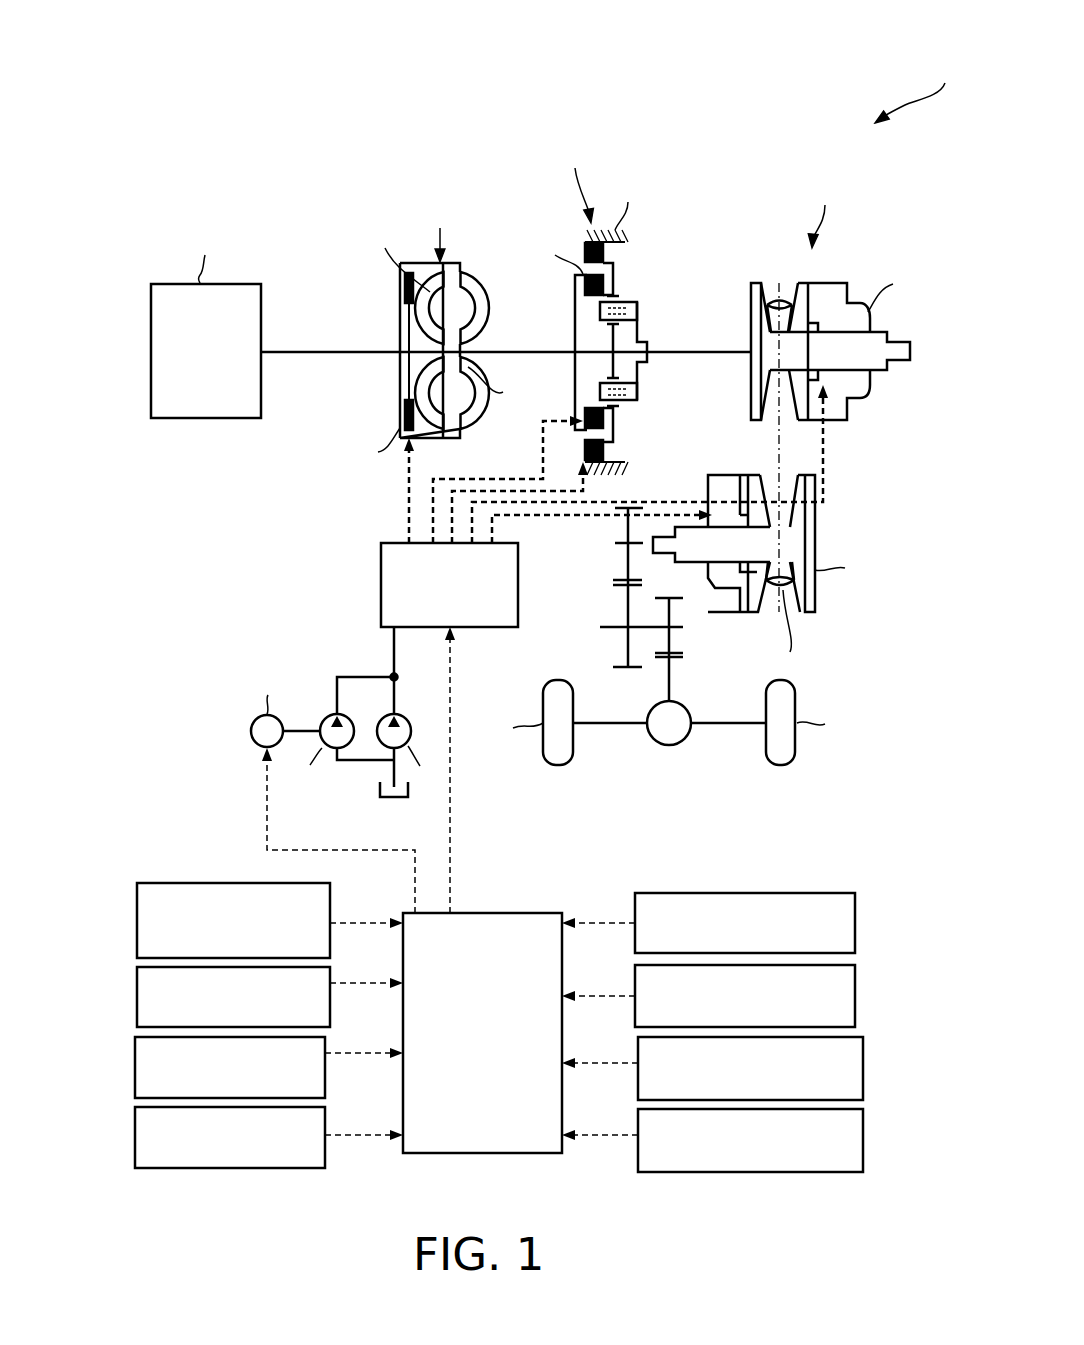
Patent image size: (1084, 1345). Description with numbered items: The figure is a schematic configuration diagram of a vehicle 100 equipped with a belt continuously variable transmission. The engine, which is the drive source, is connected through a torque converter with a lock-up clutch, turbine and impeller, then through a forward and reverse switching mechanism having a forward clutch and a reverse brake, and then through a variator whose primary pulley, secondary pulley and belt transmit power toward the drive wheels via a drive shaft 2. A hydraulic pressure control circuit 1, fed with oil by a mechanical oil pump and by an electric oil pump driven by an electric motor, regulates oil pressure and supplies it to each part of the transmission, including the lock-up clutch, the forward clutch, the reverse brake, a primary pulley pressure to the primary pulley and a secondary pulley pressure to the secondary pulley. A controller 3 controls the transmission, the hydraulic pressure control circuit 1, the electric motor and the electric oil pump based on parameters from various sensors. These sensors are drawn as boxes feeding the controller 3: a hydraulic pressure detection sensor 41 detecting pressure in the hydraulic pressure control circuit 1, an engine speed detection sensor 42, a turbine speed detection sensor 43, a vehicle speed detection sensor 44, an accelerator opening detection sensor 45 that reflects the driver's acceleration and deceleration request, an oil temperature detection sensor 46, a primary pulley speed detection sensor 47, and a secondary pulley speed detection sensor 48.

The vehicle 100 is at (606, 77).
The hydraulic pressure control circuit 1 is at (381, 592).
The drive shaft 2 is at (672, 681).
The controller 3 is at (493, 1154).
The hydraulic pressure detection sensor 41 is at (135, 915).
The engine speed detection sensor 42 is at (135, 983).
The turbine speed detection sensor 43 is at (133, 1053).
The vehicle speed detection sensor 44 is at (133, 1123).
The accelerator opening detection sensor 45 is at (855, 925).
The oil temperature detection sensor 46 is at (855, 997).
The primary pulley speed detection sensor 47 is at (863, 1070).
The secondary pulley speed detection sensor 48 is at (863, 1142).